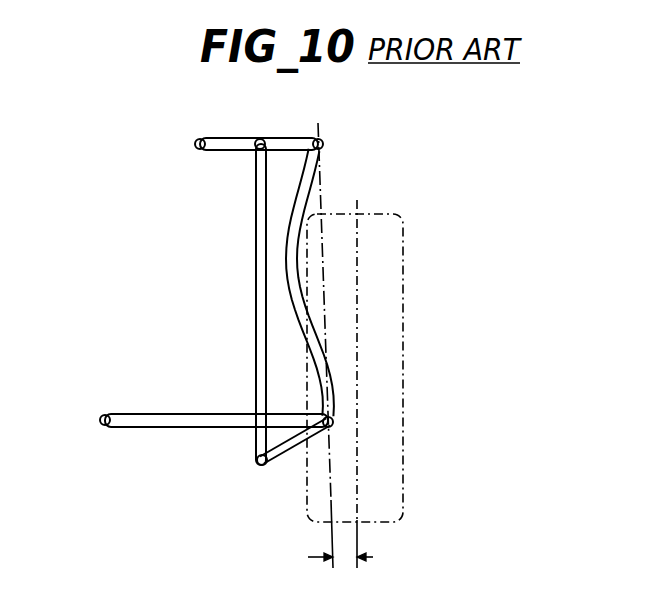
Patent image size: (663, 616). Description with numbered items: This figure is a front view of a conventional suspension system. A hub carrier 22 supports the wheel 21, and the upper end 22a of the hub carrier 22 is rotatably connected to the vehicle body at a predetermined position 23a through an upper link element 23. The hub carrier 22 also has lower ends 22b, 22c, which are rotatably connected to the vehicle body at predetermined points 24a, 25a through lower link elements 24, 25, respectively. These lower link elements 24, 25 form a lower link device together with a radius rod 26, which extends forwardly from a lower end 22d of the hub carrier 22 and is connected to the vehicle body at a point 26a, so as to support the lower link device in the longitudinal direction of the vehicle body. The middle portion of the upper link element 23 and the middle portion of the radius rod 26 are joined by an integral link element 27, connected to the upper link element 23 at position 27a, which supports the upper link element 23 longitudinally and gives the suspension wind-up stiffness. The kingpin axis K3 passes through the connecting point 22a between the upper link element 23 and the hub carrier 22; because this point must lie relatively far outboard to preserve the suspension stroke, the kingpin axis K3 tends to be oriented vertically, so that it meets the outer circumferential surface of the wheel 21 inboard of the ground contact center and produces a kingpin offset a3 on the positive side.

The wheel 21 is at (404, 270).
The hub carrier 22 is at (313, 183).
The upper end of hub carrier 22a is at (323, 136).
The lower end of hub carrier 22b is at (435, 429).
The lower end of hub carrier 22c is at (333, 424).
The lower end of hub carrier 22d is at (255, 470).
The upper link element 23 is at (293, 138).
The predetermined position 23a is at (200, 138).
The lower link element 24 is at (204, 451).
The predetermined point 24a is at (120, 388).
The lower link element 25 is at (135, 428).
The predetermined point 25a is at (103, 413).
The radius rod 26 is at (213, 489).
The connecting point 26a is at (213, 489).
The integral link element 27 is at (255, 238).
The connecting position 27a is at (259, 138).
The kingpin axis K3 is at (333, 462).
The kingpin offset a3 is at (340, 576).